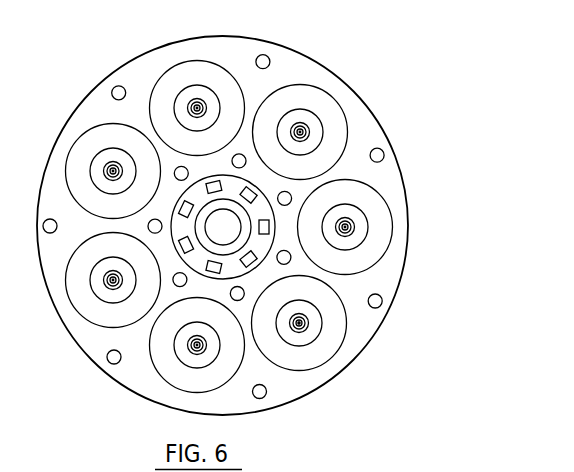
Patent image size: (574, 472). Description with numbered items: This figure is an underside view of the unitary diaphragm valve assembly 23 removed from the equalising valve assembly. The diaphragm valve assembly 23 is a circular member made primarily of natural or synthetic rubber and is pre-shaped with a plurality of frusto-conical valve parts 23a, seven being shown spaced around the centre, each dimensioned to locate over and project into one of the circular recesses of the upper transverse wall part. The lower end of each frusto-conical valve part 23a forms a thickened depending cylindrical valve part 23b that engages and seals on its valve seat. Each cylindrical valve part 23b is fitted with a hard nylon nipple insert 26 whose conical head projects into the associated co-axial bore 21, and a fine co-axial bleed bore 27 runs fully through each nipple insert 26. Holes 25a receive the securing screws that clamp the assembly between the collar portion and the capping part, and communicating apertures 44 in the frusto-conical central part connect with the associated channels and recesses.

The unitary diaphragm valve assembly 23 is at (352, 70).
The frusto-conical valve part 23a is at (377, 247).
The thickened depending cylindrical valve part 23b is at (364, 220).
The holes 25a is at (291, 191).
The communicating apertures 44 is at (269, 226).
The nipple insert 26 is at (307, 322).
The fine co-axial bleed bore 27 is at (306, 325).
The co-axial bore 21 is at (302, 329).